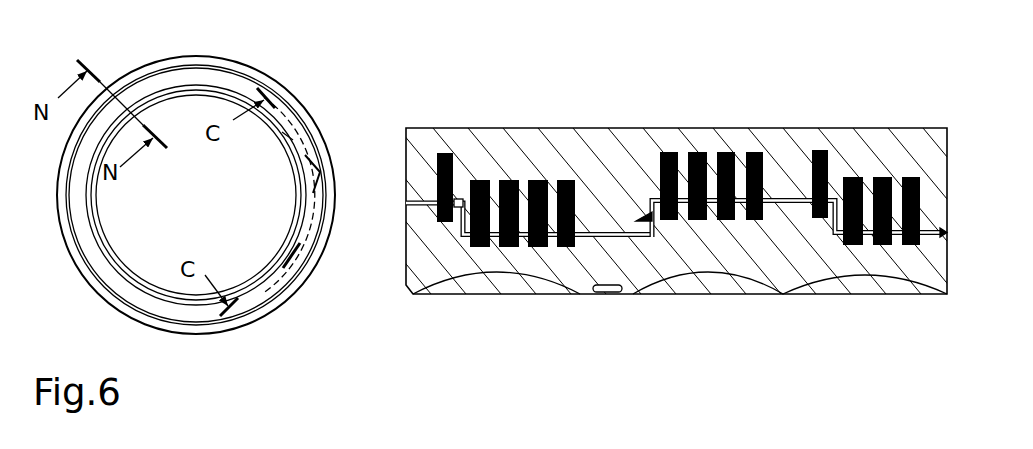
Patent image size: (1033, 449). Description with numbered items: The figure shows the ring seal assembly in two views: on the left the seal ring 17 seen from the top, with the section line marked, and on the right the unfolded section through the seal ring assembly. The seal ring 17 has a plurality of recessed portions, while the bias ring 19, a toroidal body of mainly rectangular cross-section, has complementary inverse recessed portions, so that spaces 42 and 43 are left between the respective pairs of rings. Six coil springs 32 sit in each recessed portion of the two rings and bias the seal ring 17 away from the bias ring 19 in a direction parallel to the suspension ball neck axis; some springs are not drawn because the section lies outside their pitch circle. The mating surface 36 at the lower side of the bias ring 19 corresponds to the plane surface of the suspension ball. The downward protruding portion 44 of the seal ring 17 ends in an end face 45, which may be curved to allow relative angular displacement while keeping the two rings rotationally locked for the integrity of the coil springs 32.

The seal ring 17 is at (607, 145).
The bias ring 19 is at (701, 276).
The coil springs 32 is at (515, 180).
The mating surface 36 is at (484, 291).
The space 42 is at (782, 195).
The space 43 is at (595, 287).
The downward protruding portion 44 is at (650, 200).
The end face 45 is at (625, 217).